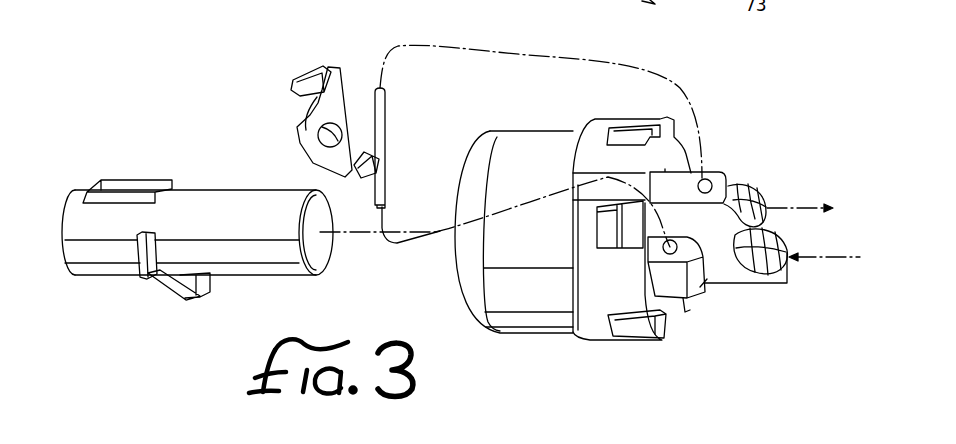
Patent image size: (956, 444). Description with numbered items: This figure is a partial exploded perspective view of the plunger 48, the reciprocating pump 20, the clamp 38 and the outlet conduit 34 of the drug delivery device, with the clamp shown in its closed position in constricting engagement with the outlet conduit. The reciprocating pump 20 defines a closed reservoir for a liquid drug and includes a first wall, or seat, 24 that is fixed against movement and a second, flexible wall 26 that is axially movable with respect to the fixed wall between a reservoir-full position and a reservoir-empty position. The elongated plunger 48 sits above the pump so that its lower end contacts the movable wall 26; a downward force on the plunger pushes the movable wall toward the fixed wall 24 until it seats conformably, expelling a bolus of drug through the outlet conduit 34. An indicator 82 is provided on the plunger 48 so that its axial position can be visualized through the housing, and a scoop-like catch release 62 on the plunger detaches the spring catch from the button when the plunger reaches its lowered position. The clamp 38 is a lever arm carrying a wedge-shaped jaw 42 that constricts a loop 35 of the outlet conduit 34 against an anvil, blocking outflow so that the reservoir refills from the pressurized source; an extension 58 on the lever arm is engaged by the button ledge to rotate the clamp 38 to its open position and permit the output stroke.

The reciprocating pump 20 is at (632, 247).
The first wall, or seat 24 is at (598, 332).
The second, flexible wall 26 is at (481, 262).
The outlet conduit 34 is at (528, 53).
The loop 35 is at (382, 107).
The clamp 38 is at (331, 94).
The wedge-shaped jaw 42 is at (383, 168).
The plunger 48 is at (193, 210).
The extension 58 is at (300, 87).
The catch release 62 is at (210, 278).
The indicator 82 is at (147, 278).